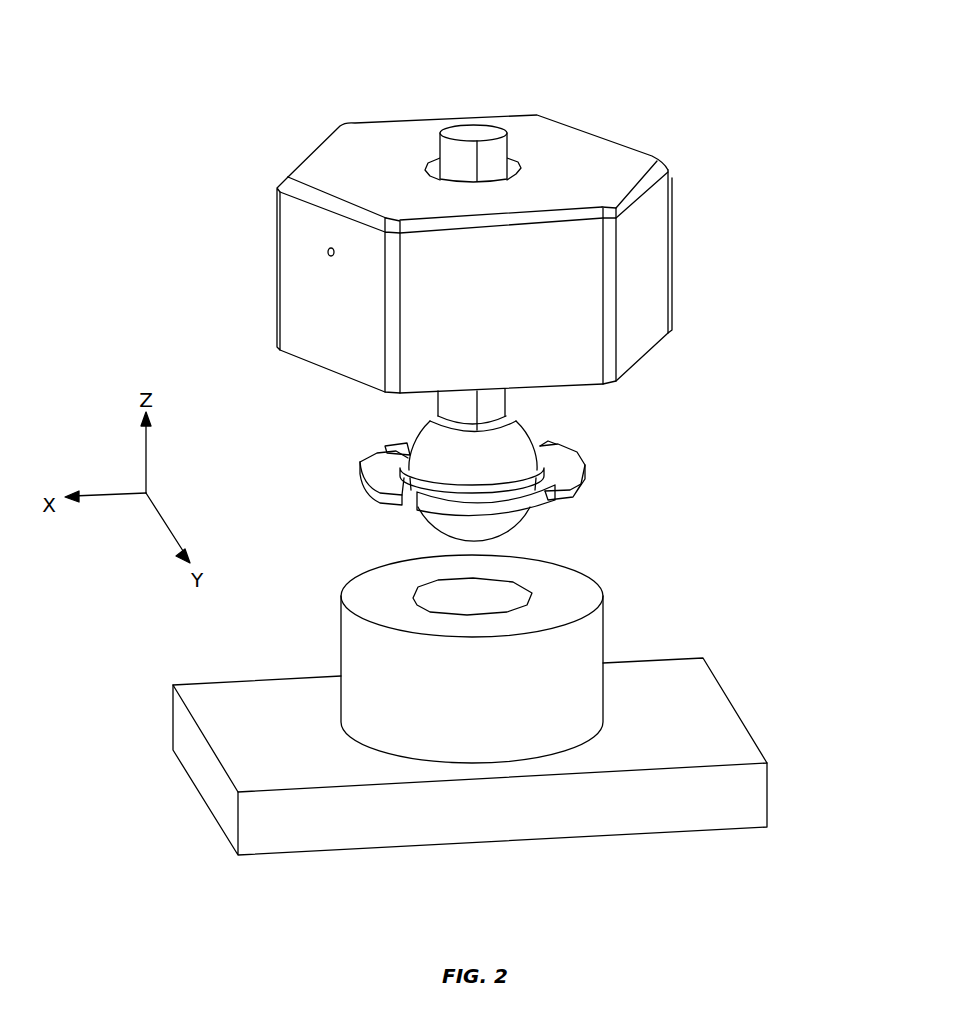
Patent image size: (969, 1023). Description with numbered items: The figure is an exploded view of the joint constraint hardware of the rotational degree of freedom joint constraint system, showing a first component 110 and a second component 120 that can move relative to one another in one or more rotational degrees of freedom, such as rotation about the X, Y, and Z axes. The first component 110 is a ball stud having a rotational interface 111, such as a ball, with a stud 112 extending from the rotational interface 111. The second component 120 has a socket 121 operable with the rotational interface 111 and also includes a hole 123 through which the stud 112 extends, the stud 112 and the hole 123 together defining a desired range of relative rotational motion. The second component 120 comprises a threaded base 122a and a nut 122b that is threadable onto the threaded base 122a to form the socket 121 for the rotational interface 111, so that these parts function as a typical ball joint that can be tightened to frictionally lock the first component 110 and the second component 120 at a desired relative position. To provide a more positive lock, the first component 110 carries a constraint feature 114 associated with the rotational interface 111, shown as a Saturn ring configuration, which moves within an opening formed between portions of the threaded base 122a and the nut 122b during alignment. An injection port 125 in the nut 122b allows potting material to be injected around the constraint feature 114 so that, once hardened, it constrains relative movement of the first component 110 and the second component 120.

The first component 110 is at (315, 410).
The rotational interface 111 is at (522, 428).
The stud 112 is at (495, 152).
The constraint feature 114 is at (360, 483).
The second component 120 is at (628, 612).
The socket 121 is at (485, 593).
The threaded base 122a is at (341, 655).
The nut 122b is at (277, 313).
The hole 123 is at (517, 165).
The injection port 125 is at (325, 252).